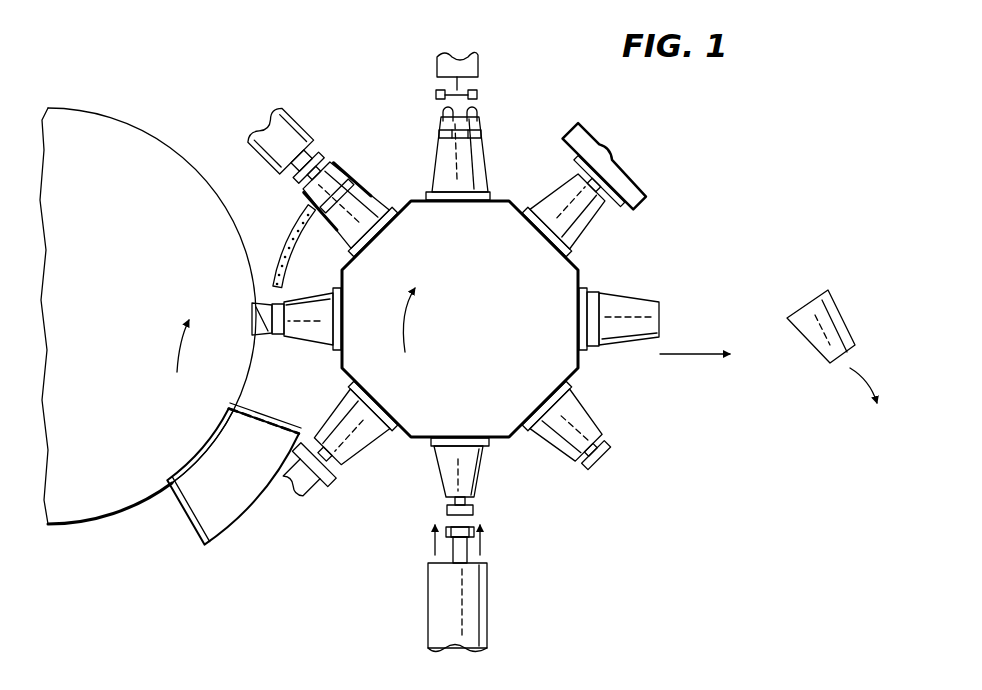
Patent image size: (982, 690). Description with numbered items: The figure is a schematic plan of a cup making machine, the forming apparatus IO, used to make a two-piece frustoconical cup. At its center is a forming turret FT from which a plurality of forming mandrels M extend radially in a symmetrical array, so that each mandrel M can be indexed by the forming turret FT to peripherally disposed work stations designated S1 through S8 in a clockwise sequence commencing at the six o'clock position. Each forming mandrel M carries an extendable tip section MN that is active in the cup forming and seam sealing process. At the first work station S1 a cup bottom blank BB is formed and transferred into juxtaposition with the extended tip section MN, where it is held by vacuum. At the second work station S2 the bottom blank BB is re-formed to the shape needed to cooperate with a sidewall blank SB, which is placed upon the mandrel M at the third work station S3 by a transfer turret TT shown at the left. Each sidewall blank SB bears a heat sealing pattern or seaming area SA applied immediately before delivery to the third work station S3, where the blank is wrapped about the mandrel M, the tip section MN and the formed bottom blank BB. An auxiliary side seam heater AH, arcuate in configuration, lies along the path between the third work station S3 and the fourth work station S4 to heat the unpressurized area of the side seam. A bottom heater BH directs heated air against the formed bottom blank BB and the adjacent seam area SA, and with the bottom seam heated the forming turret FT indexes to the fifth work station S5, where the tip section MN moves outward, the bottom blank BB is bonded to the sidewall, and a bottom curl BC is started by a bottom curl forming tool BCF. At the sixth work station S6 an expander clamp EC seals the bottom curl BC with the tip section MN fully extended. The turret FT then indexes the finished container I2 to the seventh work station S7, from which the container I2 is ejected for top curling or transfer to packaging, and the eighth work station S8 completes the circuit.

The forming turret FT is at (522, 307).
The transfer turret TT is at (112, 324).
The sidewall blank SB is at (243, 486).
The seaming area SA is at (262, 404).
The auxiliary side seam heater AH is at (292, 226).
The forming mandrel M is at (443, 170).
The first work station S1 is at (568, 500).
The second work station S2 is at (412, 473).
The third work station S3 is at (292, 373).
The fourth work station S4 is at (246, 148).
The fifth work station S5 is at (522, 70).
The sixth work station S6 is at (679, 217).
The seventh work station S7 is at (710, 330).
The eighth work station S8 is at (632, 417).
The tip section MN is at (472, 141).
The bottom blank BB is at (440, 132).
The bottom curl BC is at (470, 108).
The bottom curl forming tool BCF is at (437, 97).
The bottom heater BH is at (318, 122).
The expander clamp EC is at (603, 173).
The finished container I2 is at (838, 300).
The forming apparatus IO is at (720, 255).